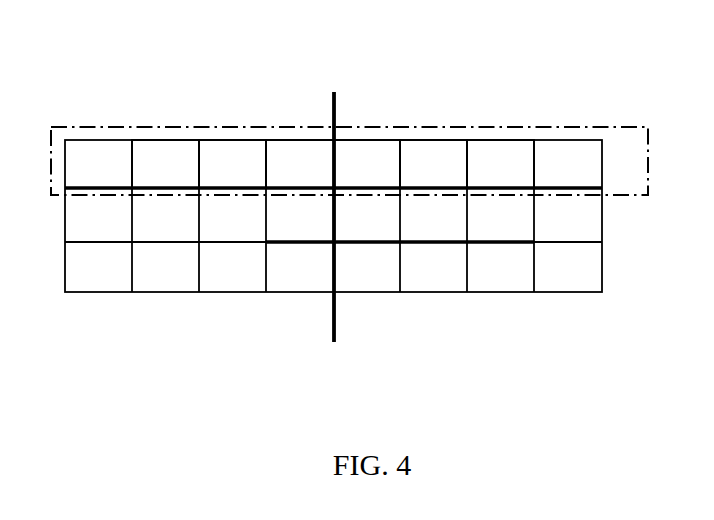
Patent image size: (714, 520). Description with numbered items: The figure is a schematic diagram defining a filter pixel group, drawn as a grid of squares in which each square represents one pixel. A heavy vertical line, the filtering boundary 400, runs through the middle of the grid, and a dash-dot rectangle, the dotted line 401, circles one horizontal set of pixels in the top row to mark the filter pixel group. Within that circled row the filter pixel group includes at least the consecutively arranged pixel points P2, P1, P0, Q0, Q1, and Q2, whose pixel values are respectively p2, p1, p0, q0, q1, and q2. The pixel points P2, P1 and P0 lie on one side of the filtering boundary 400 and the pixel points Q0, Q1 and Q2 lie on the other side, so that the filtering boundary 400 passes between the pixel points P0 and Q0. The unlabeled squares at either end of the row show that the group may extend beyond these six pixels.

The filtering boundary 400 is at (352, 86).
The dotted line 401 is at (75, 120).
The pixel point P2 is at (165, 164).
The pixel point P1 is at (232, 164).
The pixel point P0 is at (300, 164).
The pixel point Q0 is at (367, 164).
The pixel point Q1 is at (433, 164).
The pixel point Q2 is at (500, 164).